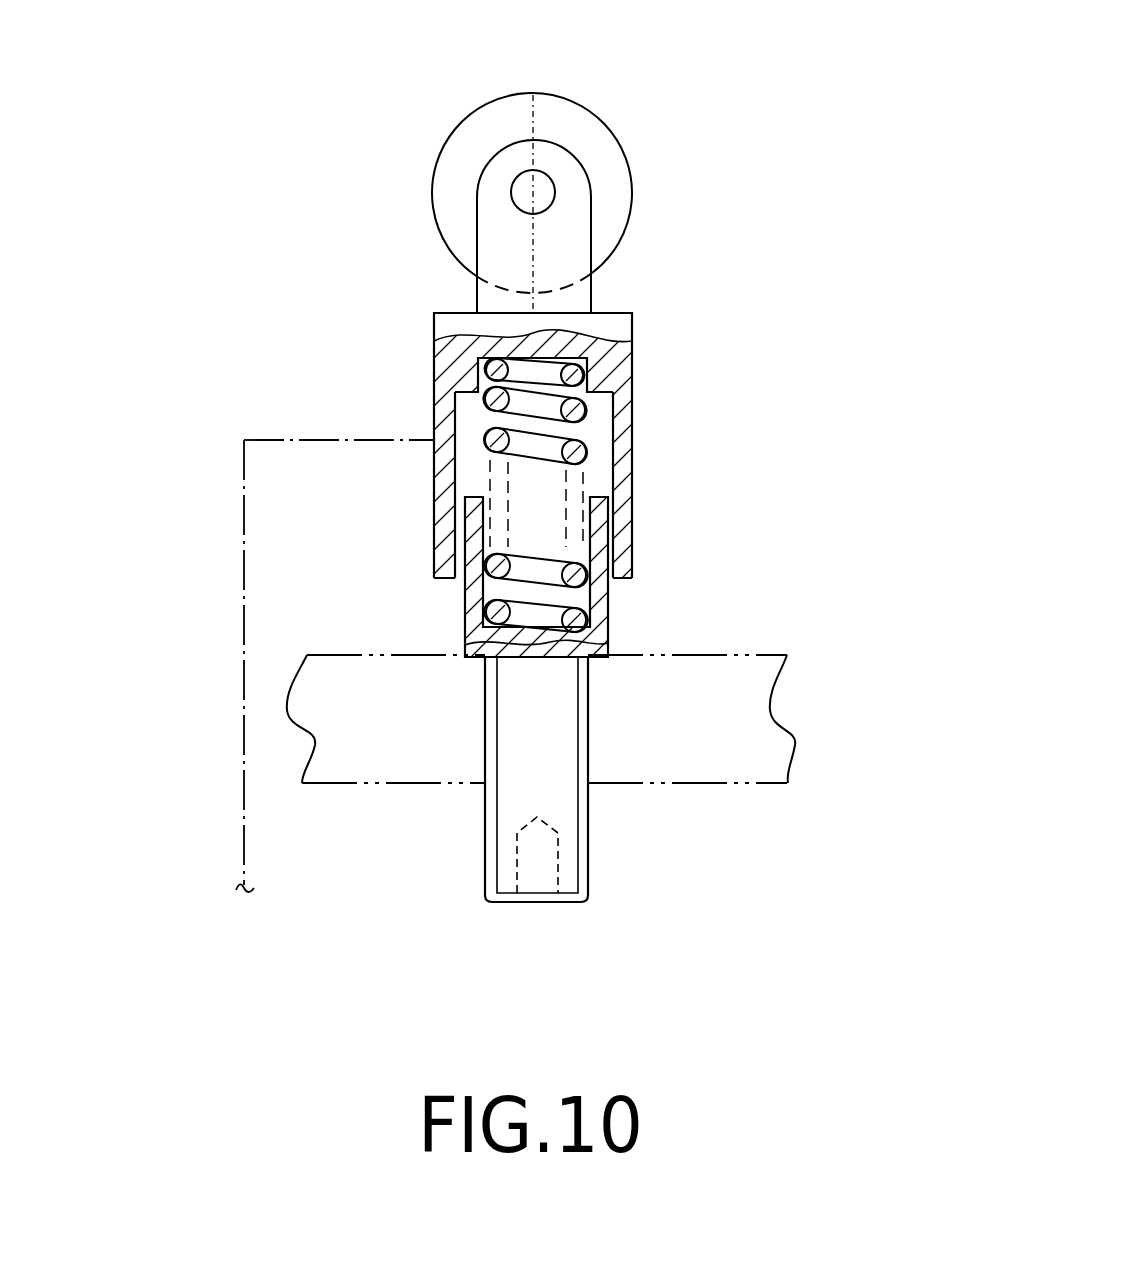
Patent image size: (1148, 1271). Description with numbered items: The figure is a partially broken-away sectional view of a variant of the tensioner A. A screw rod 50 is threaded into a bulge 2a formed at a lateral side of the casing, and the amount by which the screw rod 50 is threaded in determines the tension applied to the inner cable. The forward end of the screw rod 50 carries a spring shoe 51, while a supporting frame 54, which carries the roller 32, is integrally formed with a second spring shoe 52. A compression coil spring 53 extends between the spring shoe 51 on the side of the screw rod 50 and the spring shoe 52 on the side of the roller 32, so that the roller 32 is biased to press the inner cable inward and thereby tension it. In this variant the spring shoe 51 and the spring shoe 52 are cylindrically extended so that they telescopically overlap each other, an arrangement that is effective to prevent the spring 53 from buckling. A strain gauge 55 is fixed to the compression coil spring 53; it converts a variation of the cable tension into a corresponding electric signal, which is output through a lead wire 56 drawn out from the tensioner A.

The roller 32 is at (607, 158).
The supporting frame 54 is at (553, 258).
The compression coil spring 53 is at (625, 390).
The spring shoe 52 is at (622, 457).
The spring shoe 51 is at (600, 580).
The strain gauge 55 is at (487, 438).
The screw rod 50 is at (562, 808).
The bulge 2a is at (730, 785).
The lead wire 56 is at (242, 703).
The tensioner A is at (854, 94).